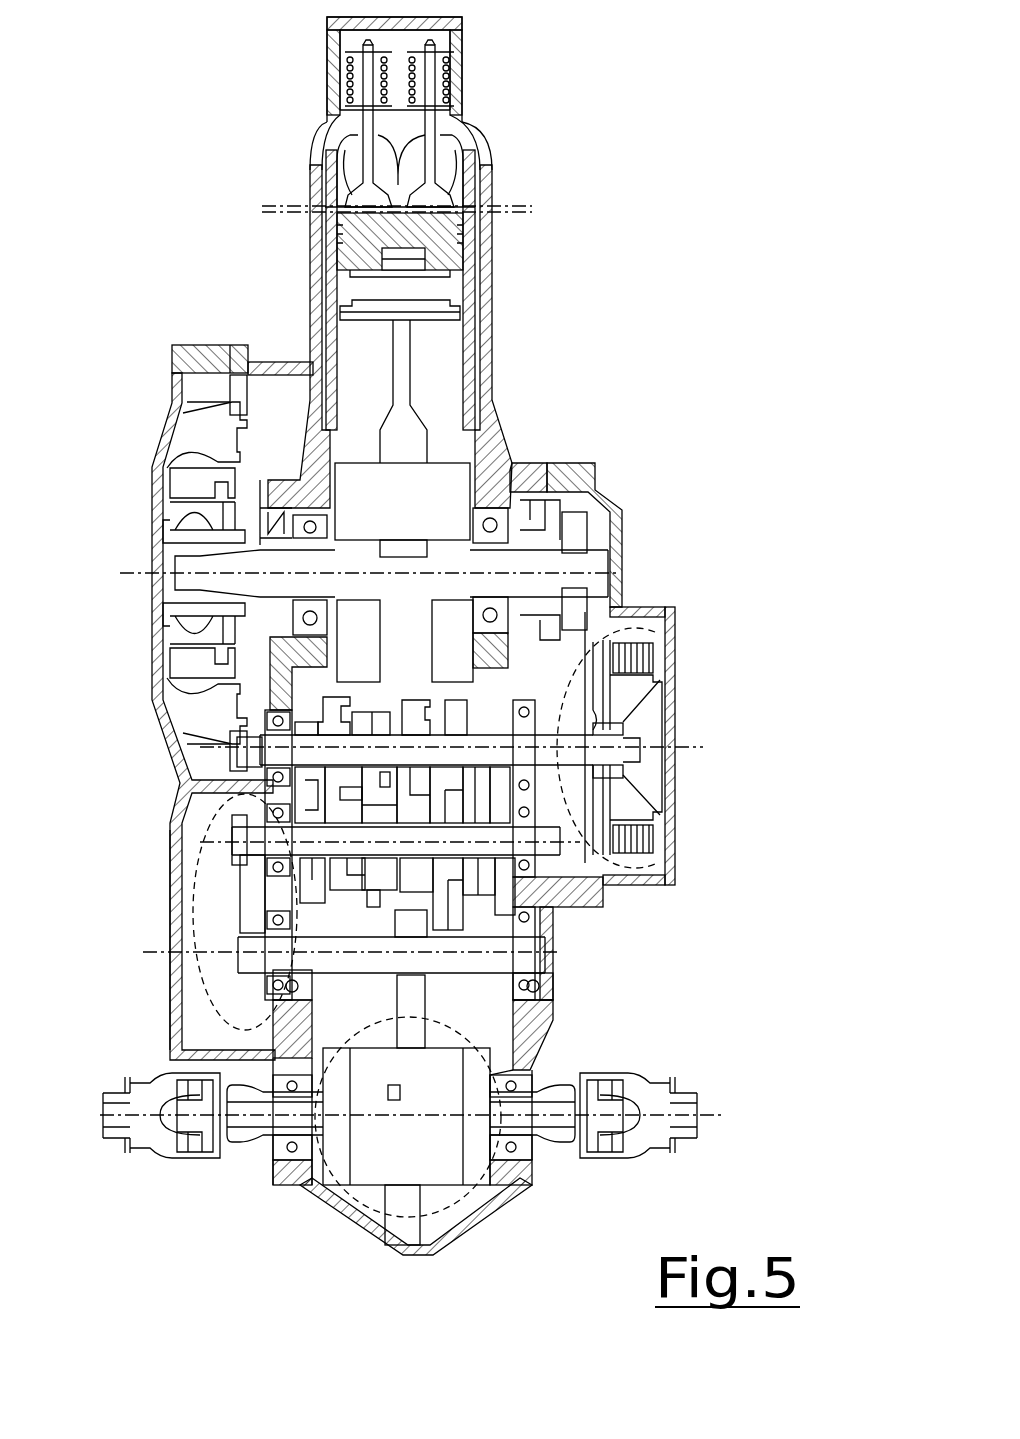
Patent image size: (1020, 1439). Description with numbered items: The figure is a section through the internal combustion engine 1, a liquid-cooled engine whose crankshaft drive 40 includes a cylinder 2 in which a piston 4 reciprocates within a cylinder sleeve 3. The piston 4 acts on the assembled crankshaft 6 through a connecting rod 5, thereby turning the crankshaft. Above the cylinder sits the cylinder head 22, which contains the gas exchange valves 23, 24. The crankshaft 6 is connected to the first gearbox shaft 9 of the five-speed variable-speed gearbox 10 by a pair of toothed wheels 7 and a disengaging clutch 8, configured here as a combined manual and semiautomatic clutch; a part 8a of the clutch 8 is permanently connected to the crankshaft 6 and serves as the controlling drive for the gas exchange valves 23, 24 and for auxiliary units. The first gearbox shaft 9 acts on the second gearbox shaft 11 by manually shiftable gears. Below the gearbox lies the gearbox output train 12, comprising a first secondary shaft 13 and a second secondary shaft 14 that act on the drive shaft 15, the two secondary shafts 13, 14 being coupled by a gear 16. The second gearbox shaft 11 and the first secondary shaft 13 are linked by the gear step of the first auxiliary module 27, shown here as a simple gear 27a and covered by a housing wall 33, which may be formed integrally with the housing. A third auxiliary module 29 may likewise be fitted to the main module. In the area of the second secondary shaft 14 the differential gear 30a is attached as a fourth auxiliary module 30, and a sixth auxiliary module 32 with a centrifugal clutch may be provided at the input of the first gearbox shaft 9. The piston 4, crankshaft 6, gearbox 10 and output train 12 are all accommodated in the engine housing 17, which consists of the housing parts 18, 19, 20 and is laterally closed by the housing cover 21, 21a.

The internal combustion engine 1 is at (512, 393).
The cylinder 2 is at (300, 278).
The cylinder sleeve 3 is at (468, 320).
The piston 4 is at (450, 260).
The connecting rod 5 is at (412, 452).
The crankshaft 6 is at (590, 562).
The pair of toothed wheels 7 is at (572, 640).
The disengaging clutch 8 is at (650, 673).
The part of the clutch 8a is at (663, 865).
The first gearbox shaft 9 is at (615, 745).
The variable-speed gearbox 10 is at (270, 801).
The second gearbox shaft 11 is at (625, 938).
The gearbox output train 12 is at (512, 1049).
The first secondary shaft 13 is at (530, 958).
The second secondary shaft 14 is at (307, 1120).
The drive shaft 15 is at (162, 1145).
The gear 16 is at (418, 1005).
The engine housing 17 is at (552, 447).
The housing part 18 is at (313, 358).
The housing part 19 is at (170, 870).
The housing part 20 is at (338, 1207).
The housing cover 21 is at (677, 813).
The housing cover 21a is at (173, 486).
The cylinder head 22 is at (480, 190).
The gas exchange valve 23 is at (367, 135).
The gas exchange valve 24 is at (428, 132).
The first auxiliary module 27 is at (207, 1010).
The simple gear 27a is at (226, 906).
The third auxiliary module 29 is at (473, 758).
The fourth auxiliary module 30 is at (377, 1212).
The differential gear 30a is at (442, 1153).
The sixth auxiliary module 32 is at (667, 717).
The housing wall 33 is at (175, 907).
The crankshaft drive 40 is at (458, 405).